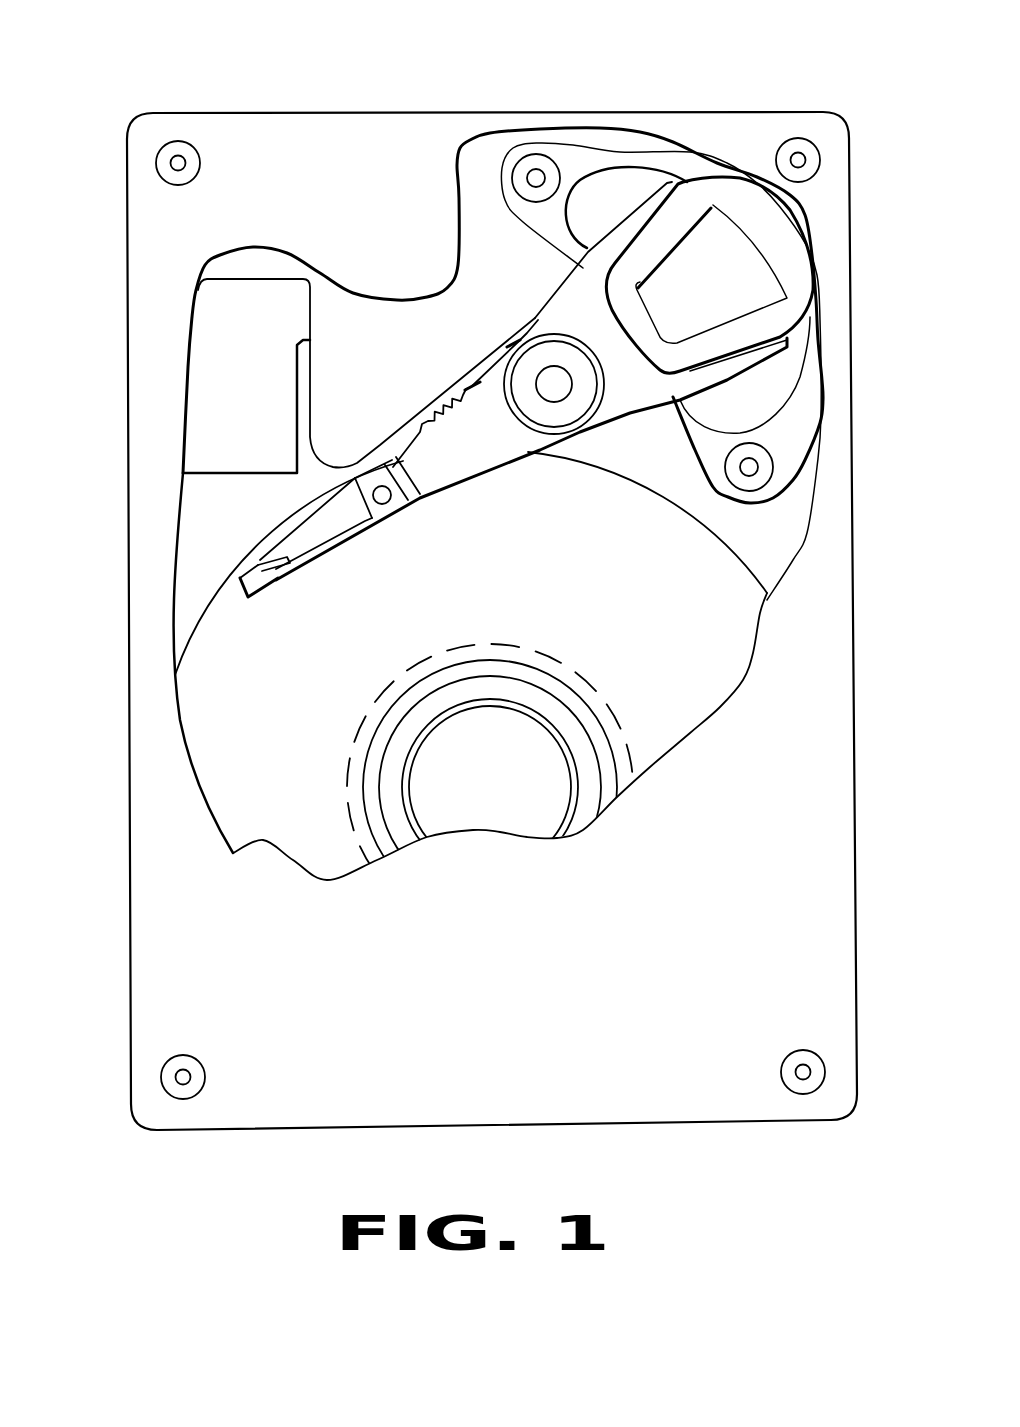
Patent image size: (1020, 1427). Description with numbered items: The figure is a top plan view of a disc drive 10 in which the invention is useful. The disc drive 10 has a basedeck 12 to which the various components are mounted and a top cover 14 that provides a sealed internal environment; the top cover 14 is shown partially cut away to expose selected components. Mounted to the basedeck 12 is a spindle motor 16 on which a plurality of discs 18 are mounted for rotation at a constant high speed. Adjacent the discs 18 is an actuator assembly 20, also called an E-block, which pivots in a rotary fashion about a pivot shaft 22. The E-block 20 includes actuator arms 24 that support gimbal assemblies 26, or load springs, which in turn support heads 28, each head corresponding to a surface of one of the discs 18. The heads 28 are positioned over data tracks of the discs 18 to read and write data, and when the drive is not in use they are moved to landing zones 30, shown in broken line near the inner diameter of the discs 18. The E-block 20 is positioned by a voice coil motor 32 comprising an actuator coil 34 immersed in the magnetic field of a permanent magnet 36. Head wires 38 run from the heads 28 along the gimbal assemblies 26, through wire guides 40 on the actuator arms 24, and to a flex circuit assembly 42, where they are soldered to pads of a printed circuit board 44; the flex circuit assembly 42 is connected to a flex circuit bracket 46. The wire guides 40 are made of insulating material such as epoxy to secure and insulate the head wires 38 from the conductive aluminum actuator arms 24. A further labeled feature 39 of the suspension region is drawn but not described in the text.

The disc drive 10 is at (202, 92).
The basedeck 12 is at (367, 313).
The top cover 14 is at (172, 240).
The spindle motor 16 is at (499, 787).
The discs 18 is at (697, 657).
The actuator assembly 20 is at (530, 436).
The pivot shaft 22 is at (557, 388).
The actuator arms 24 is at (445, 455).
The gimbal assemblies 26 is at (315, 538).
The heads 28 is at (250, 596).
The landing zones 30 is at (318, 720).
The voice coil motor 32 is at (622, 190).
The actuator coil 34 is at (790, 266).
The permanent magnet 36 is at (593, 215).
The head wires 38 is at (443, 453).
The suspension flexure 39 is at (297, 518).
The wire guides 40 is at (457, 413).
The flex circuit assembly 42 is at (450, 373).
The printed circuit board 44 is at (498, 350).
The flex circuit bracket 46 is at (225, 388).